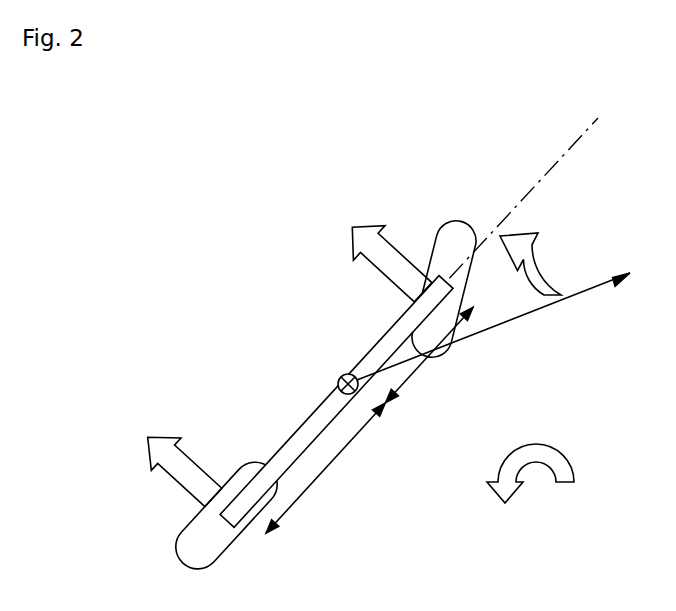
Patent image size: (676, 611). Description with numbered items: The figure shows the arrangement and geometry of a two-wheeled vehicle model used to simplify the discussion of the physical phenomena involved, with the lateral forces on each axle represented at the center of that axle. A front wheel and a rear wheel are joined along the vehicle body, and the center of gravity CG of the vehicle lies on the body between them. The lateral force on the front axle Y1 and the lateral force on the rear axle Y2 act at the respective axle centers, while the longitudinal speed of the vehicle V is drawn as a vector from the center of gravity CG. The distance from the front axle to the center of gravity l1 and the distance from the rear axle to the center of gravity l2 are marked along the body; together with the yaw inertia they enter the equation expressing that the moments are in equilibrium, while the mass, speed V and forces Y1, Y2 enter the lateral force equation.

The lateral force on the front axle Y1 is at (404, 244).
The lateral force on the rear axle Y2 is at (185, 453).
The center of gravity CG is at (330, 370).
The longitudinal speed of the vehicle V is at (493, 326).
The distance from the front axle to the center of gravity l1 is at (430, 355).
The distance from the rear axle to the center of gravity l2 is at (326, 468).